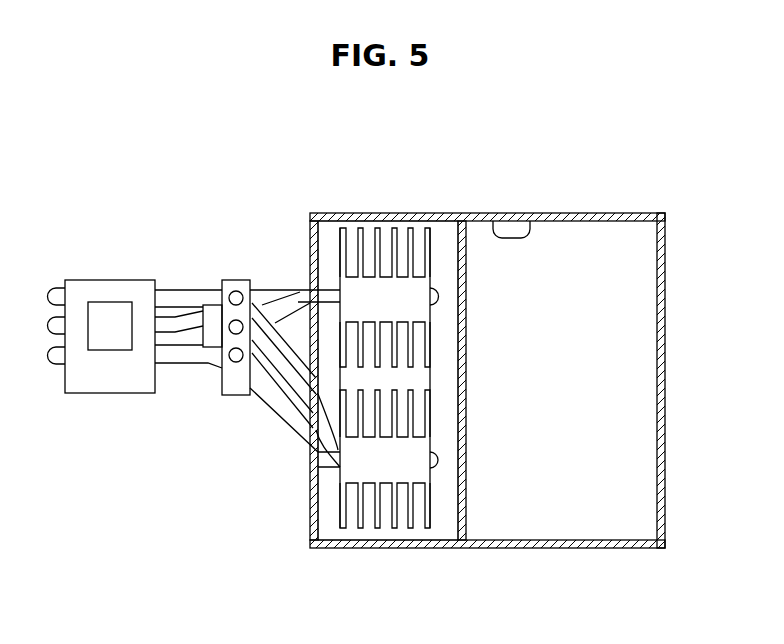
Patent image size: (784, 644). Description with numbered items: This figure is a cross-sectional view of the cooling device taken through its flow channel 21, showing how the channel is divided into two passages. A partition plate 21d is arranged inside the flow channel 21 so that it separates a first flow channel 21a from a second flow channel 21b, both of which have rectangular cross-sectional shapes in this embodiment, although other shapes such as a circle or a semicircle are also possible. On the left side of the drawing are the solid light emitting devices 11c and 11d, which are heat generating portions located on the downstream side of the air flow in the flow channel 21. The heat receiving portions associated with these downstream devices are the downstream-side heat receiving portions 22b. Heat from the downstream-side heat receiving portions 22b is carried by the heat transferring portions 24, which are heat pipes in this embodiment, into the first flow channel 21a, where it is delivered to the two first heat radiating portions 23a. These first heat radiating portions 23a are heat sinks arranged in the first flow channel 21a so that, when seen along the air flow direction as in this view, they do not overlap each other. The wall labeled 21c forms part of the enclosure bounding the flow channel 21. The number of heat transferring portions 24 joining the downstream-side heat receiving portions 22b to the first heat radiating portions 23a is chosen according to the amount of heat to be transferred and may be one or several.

The solid light emitting device 11c is at (212, 303).
The solid light emitting device 11d is at (108, 302).
The flow channel 21 is at (513, 172).
The first flow channel 21a is at (457, 227).
The second flow channel 21b is at (497, 221).
The side wall of case 21c is at (312, 497).
The partition plate 21d is at (463, 497).
The downstream-side heat receiving portion 22b is at (155, 382).
The first heat radiating portion 23a is at (430, 418).
The heat transferring portion 24 is at (266, 289).